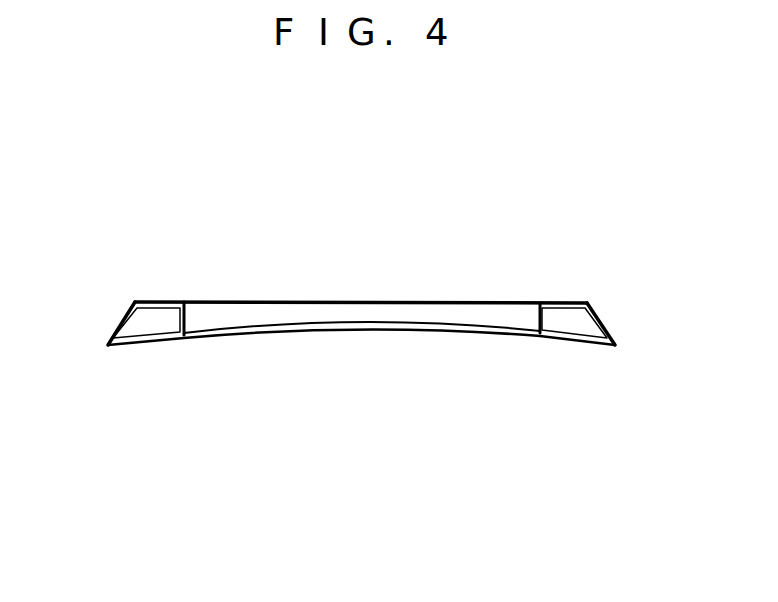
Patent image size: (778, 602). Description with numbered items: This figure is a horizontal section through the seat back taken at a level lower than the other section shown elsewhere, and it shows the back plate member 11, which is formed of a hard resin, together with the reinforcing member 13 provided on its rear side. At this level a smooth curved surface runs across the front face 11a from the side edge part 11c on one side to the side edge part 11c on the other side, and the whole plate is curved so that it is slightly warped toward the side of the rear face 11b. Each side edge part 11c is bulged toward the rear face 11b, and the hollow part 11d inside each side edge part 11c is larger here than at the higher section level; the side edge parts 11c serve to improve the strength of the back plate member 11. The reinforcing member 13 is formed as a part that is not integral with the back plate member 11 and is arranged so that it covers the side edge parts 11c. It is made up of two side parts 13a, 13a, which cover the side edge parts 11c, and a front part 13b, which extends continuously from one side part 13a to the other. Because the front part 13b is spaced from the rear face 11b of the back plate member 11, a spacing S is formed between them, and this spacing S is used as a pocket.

The back plate member 11 is at (369, 349).
The front face 11a is at (317, 331).
The rear face 11b is at (337, 322).
The side edge part 11c is at (186, 316).
The hollow part 11d is at (578, 317).
The reinforcing member 13 is at (378, 272).
The side part 13a is at (120, 320).
The front part 13b is at (438, 302).
The spacing S is at (418, 324).